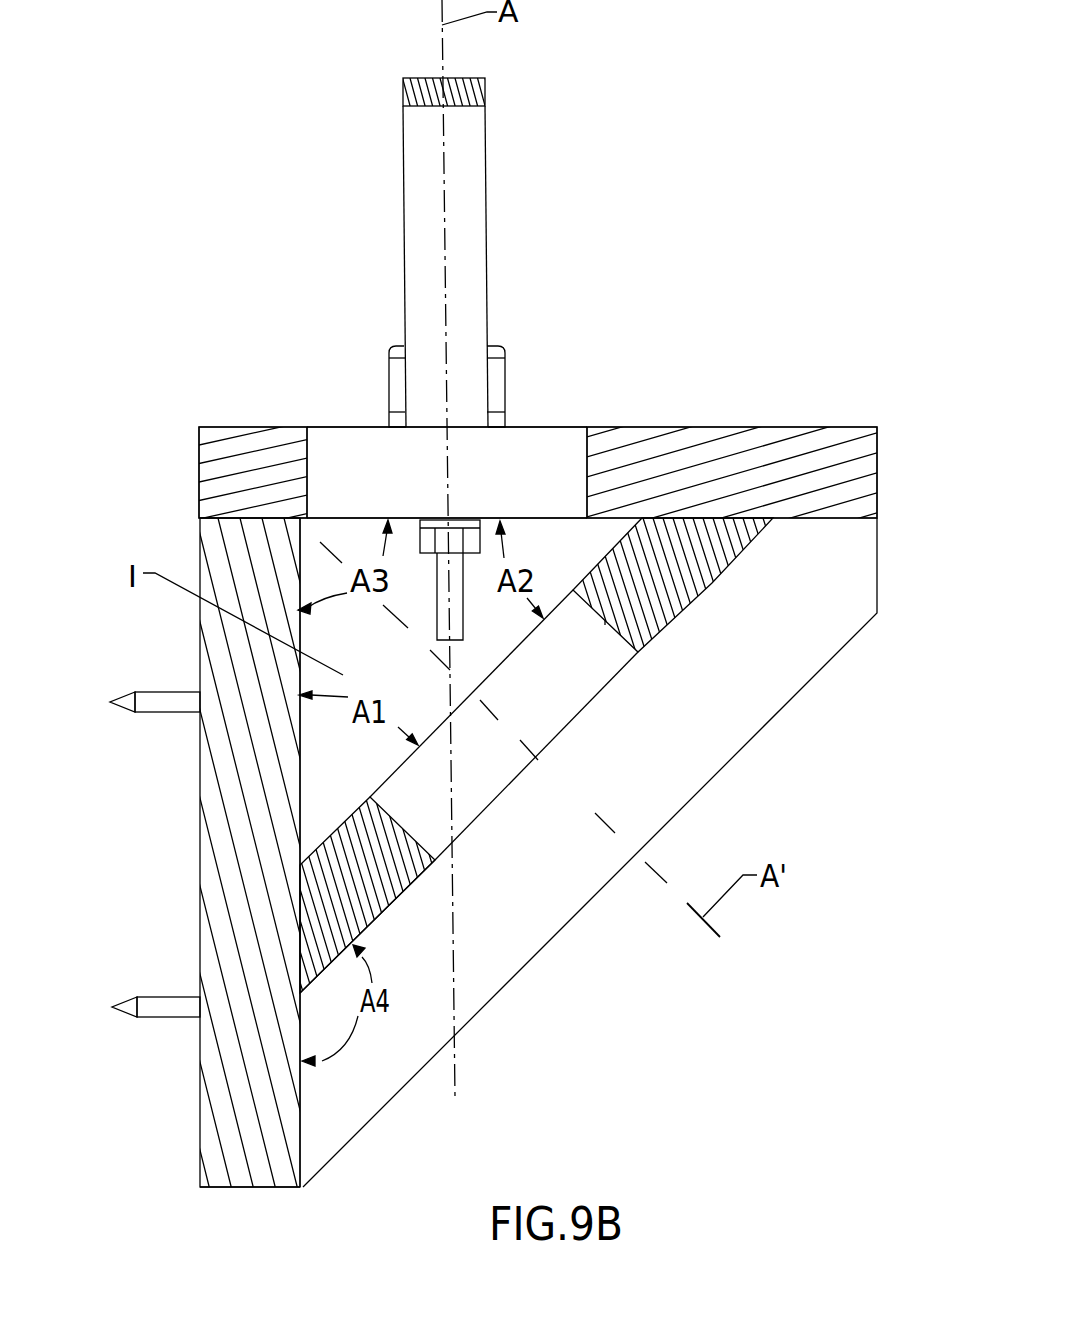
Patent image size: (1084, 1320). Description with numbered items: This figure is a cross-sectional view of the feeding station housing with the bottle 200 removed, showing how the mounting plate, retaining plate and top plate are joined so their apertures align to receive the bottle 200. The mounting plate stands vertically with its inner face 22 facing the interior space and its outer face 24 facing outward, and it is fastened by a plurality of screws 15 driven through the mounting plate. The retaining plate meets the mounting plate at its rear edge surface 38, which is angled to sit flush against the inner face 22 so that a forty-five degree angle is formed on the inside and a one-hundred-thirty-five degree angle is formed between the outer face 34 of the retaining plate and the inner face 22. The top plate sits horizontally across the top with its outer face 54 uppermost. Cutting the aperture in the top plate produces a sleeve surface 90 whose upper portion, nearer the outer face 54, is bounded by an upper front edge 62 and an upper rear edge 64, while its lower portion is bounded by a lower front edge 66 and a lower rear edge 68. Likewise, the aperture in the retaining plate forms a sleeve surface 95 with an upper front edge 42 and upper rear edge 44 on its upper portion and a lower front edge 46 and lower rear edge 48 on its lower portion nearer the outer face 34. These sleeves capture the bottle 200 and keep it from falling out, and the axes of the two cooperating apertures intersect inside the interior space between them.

The bottle 200 is at (542, 86).
The upper front edge 62 is at (732, 401).
The outer face 54 is at (538, 414).
The upper rear edge 64 is at (342, 418).
The lower rear edge 68 is at (208, 474).
The sleeve surface 90 is at (587, 482).
The lower front edge 66 is at (587, 517).
The outer face 24 is at (246, 852).
The rear edge surface 38 is at (196, 852).
The inner face 22 is at (304, 1181).
The screws 15 is at (136, 841).
The outer face 34 is at (614, 852).
The lower front edge 46 is at (744, 613).
The upper front edge 42 is at (504, 725).
The upper rear edge 44 is at (372, 865).
The sleeve surface 95 is at (588, 813).
The lower rear edge 48 is at (367, 975).